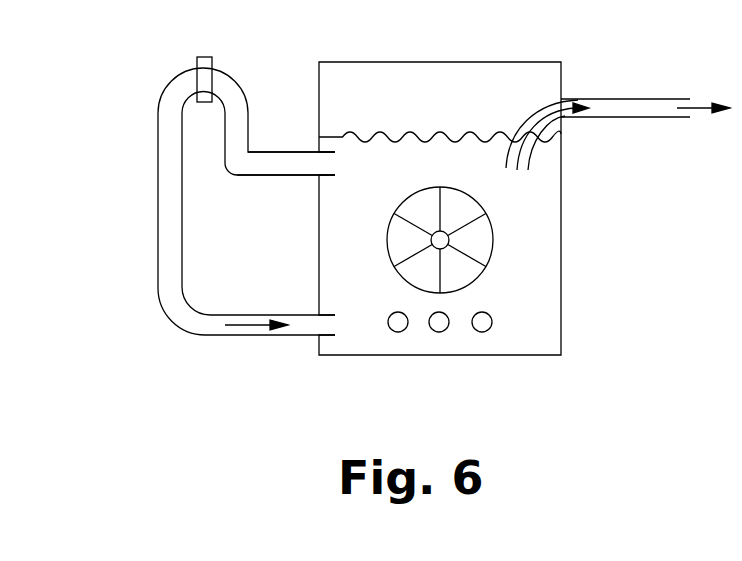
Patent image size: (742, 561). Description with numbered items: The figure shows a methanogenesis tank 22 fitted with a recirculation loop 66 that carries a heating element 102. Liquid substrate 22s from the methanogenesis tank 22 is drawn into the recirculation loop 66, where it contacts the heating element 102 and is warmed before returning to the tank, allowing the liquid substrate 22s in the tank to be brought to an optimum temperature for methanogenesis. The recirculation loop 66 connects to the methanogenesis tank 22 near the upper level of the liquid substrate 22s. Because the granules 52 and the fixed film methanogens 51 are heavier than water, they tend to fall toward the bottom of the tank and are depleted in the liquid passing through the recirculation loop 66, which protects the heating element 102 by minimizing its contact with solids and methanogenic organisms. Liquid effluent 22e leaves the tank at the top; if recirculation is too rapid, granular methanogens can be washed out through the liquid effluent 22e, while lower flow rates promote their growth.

The methanogenesis tank 22 is at (420, 340).
The liquid substrate 22s is at (283, 165).
The liquid effluent 22e is at (648, 108).
The fixed film methanogens 51 is at (450, 203).
The granules 52 is at (492, 321).
The recirculation loop 66 is at (171, 124).
The heating element 102 is at (211, 66).